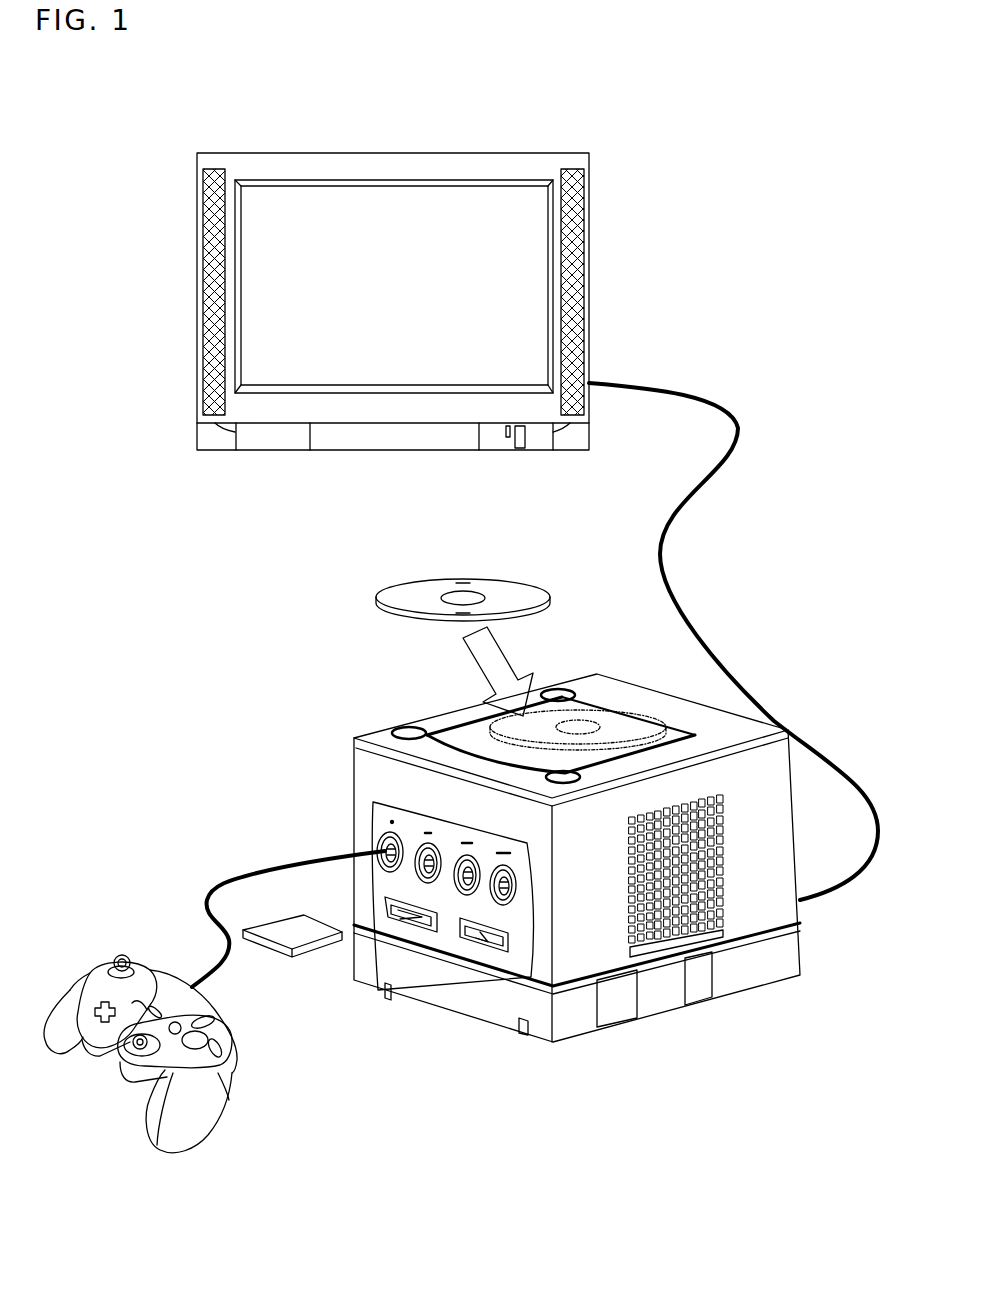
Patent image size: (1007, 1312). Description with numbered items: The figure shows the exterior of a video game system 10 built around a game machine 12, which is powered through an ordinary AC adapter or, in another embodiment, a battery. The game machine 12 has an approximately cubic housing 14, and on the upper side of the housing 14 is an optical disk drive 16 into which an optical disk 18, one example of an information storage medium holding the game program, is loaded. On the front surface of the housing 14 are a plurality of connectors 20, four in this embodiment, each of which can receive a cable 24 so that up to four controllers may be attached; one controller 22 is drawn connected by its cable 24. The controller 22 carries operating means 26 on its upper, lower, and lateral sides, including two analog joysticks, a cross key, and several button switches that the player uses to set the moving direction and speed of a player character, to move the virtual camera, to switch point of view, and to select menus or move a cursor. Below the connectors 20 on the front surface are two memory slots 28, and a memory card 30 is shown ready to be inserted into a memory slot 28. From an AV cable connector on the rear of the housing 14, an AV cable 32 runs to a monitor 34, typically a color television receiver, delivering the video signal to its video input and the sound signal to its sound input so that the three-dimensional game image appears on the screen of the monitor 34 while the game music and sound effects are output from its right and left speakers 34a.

The video game system 10 is at (217, 533).
The game machine 12 is at (628, 672).
The housing 14 is at (352, 782).
The optical disk drive 16 is at (628, 716).
The optical disk 18 is at (517, 583).
The connectors 20 is at (383, 849).
The controller 22 is at (168, 957).
The cable 24 is at (250, 873).
The operating means 26 is at (197, 1057).
The memory slot 28 is at (483, 944).
The memory card 30 is at (303, 952).
The AV cable 32 is at (666, 514).
The monitor 34 is at (590, 297).
The speakers 34a is at (203, 205).